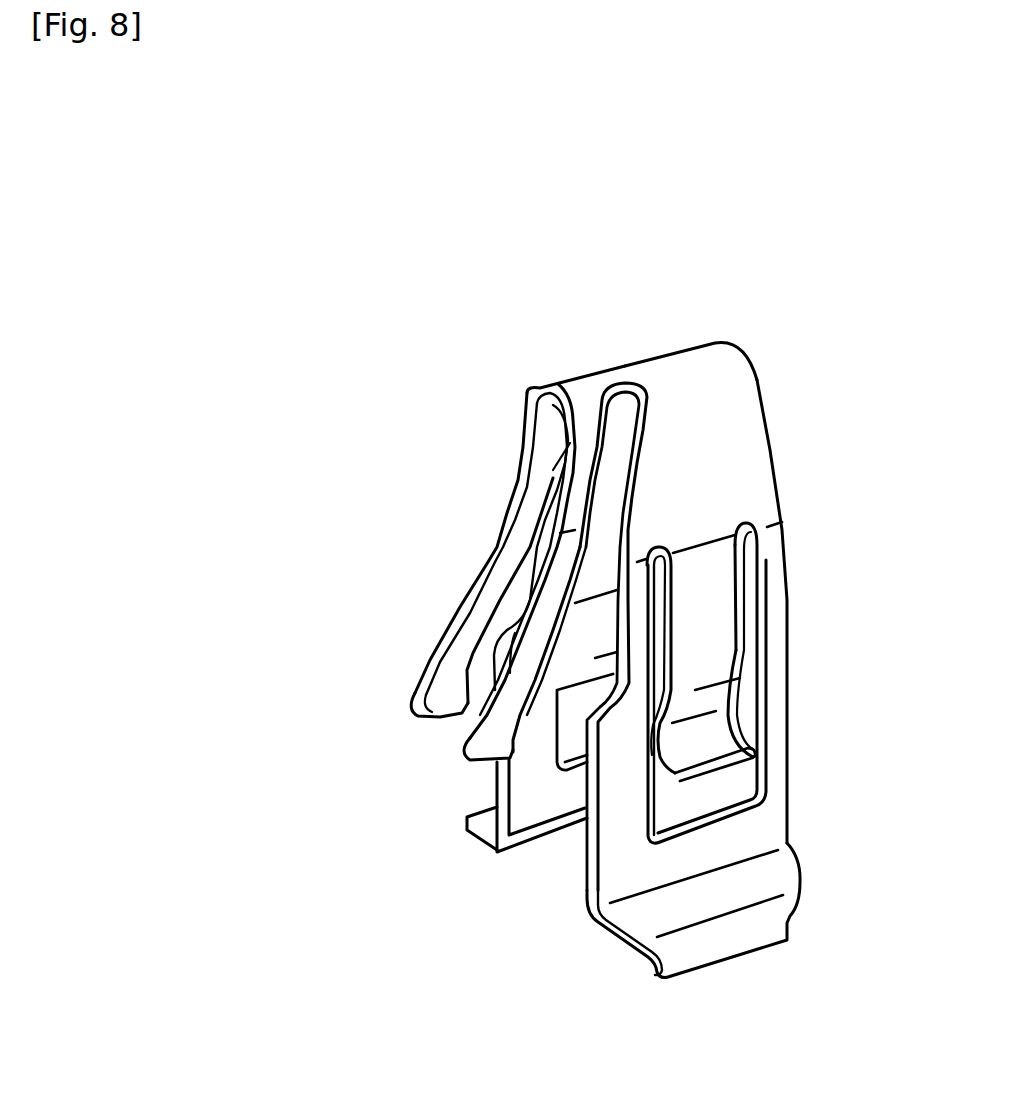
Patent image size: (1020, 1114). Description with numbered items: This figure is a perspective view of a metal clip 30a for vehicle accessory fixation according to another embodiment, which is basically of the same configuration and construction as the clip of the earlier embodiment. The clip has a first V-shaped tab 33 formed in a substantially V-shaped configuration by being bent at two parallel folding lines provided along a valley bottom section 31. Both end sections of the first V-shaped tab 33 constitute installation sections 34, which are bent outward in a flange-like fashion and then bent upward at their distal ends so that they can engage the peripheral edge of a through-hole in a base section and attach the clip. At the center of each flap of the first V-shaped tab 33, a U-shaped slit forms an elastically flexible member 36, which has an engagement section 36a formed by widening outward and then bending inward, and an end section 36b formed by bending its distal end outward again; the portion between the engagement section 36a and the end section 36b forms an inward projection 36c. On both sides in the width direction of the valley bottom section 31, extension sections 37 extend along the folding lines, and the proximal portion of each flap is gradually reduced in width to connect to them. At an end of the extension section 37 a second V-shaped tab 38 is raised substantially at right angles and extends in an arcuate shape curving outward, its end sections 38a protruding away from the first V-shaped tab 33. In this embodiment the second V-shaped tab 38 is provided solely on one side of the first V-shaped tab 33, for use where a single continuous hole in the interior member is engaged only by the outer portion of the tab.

The metal clip 30a is at (778, 300).
The valley bottom section 31 is at (693, 360).
The first V-shaped tab 33 is at (778, 578).
The installation section 34 is at (482, 837).
The elastically flexible member 36 is at (725, 658).
The engagement section 36a is at (703, 706).
The end section 36b is at (719, 770).
The inward projection 36c is at (648, 740).
The extension section 37 is at (613, 370).
The second V-shaped tab 38 is at (573, 533).
The end section 38a is at (430, 718).